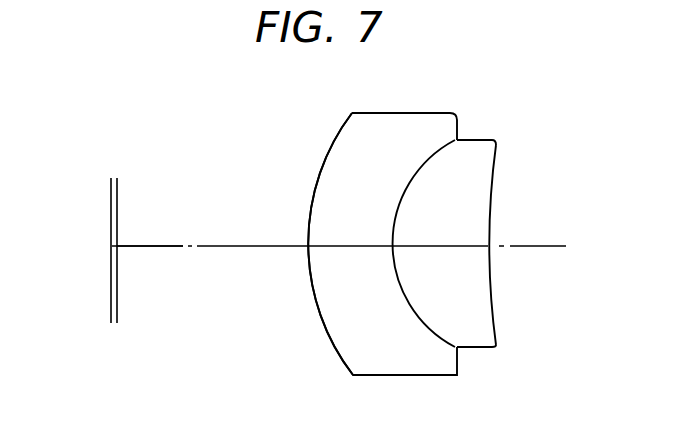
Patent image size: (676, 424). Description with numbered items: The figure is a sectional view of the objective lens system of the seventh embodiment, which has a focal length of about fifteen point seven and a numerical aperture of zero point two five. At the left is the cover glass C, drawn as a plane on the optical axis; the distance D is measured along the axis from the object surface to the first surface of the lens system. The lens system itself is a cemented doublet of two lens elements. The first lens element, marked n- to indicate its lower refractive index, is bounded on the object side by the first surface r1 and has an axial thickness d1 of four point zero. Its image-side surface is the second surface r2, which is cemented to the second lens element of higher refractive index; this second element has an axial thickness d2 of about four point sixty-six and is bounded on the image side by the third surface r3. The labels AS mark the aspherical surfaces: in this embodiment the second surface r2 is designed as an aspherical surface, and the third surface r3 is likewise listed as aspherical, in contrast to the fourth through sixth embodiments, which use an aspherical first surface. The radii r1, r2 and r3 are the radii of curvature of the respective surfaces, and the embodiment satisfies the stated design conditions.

The cover glass C is at (113, 237).
The distance from object surface to first surface D is at (207, 248).
The aspherical surface AS is at (438, 148).
The lens element of lower refractive index n- is at (382, 244).
The thickness of first lens element d1 is at (332, 245).
The thickness of second lens element d2 is at (440, 245).
The first surface r1 is at (333, 350).
The second surface r2 is at (425, 327).
The third surface r3 is at (493, 318).